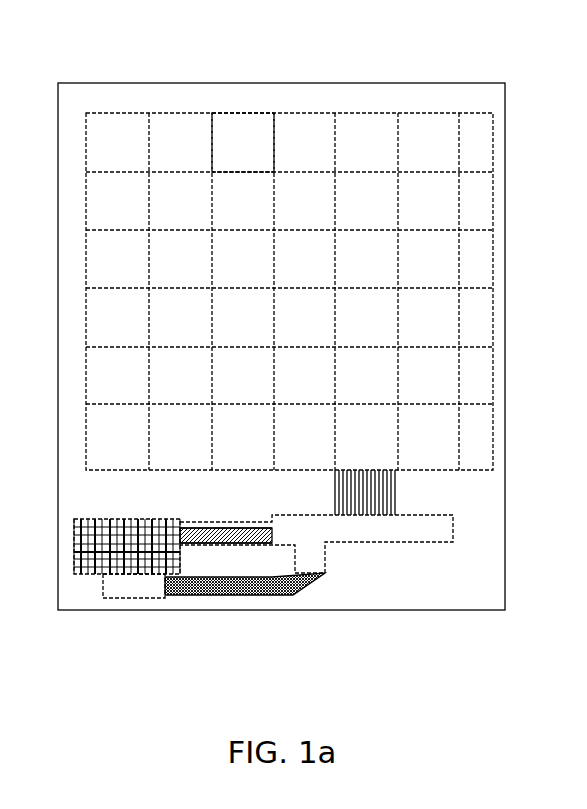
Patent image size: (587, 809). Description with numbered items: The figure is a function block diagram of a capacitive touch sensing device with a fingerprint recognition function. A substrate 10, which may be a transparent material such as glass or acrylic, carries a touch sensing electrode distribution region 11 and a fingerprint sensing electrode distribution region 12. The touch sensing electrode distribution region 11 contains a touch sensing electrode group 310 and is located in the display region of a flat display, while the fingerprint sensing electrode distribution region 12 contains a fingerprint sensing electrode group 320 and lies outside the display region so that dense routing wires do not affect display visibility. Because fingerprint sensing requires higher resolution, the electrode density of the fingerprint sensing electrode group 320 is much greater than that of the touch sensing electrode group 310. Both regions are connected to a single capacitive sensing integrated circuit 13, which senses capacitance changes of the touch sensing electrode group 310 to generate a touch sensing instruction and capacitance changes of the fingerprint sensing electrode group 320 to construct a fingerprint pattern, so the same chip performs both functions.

The substrate 10 is at (430, 592).
The touch sensing electrode distribution region 11 is at (417, 113).
The touch sensing electrode group 310 is at (242, 170).
The fingerprint sensing electrode group 320 is at (91, 562).
The fingerprint sensing electrode distribution region 12 is at (138, 575).
The capacitive sensing integrated circuit 13 is at (357, 535).